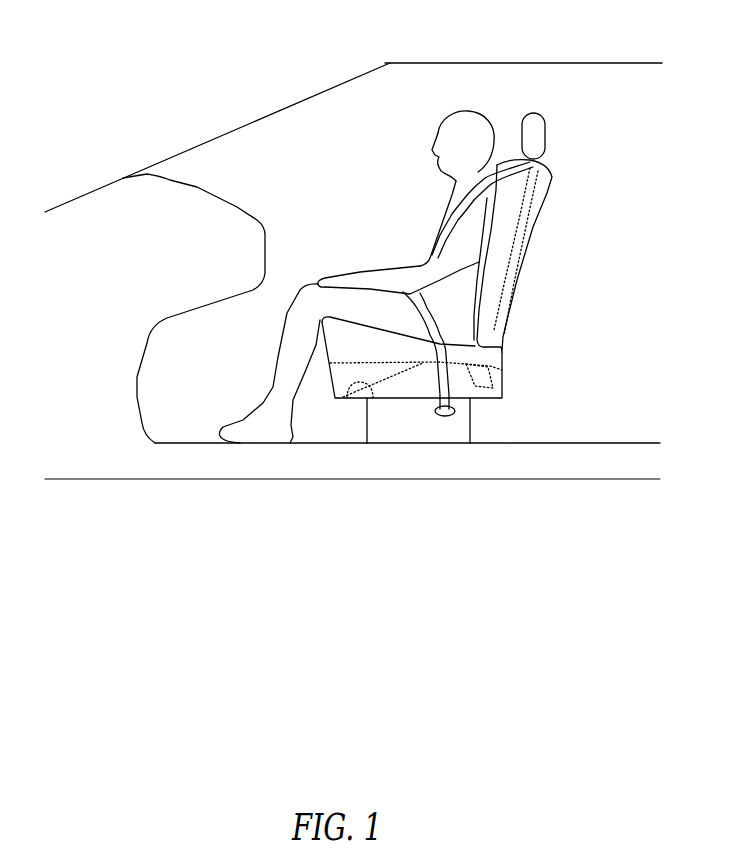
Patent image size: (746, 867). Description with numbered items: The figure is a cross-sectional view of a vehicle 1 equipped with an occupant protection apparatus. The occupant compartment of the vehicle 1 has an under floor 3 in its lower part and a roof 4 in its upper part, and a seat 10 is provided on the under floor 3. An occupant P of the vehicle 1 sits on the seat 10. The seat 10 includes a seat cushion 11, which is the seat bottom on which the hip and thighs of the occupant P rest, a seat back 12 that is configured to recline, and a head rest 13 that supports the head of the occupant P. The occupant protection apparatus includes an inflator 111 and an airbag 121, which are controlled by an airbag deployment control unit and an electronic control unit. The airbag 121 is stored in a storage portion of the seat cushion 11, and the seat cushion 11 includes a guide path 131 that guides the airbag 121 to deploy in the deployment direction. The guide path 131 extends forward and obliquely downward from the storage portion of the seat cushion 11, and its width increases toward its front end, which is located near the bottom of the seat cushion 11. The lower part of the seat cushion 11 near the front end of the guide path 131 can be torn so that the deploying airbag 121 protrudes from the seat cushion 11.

The vehicle 1 is at (615, 28).
The under floor 3 is at (600, 443).
The roof 4 is at (543, 62).
The seat 10 is at (476, 296).
The seat cushion 11 is at (438, 415).
The inflator 111 is at (502, 371).
The seat back 12 is at (523, 256).
The airbag 121 is at (508, 280).
The head rest 13 is at (533, 113).
The guide path 131 is at (347, 398).
The occupant P is at (468, 110).